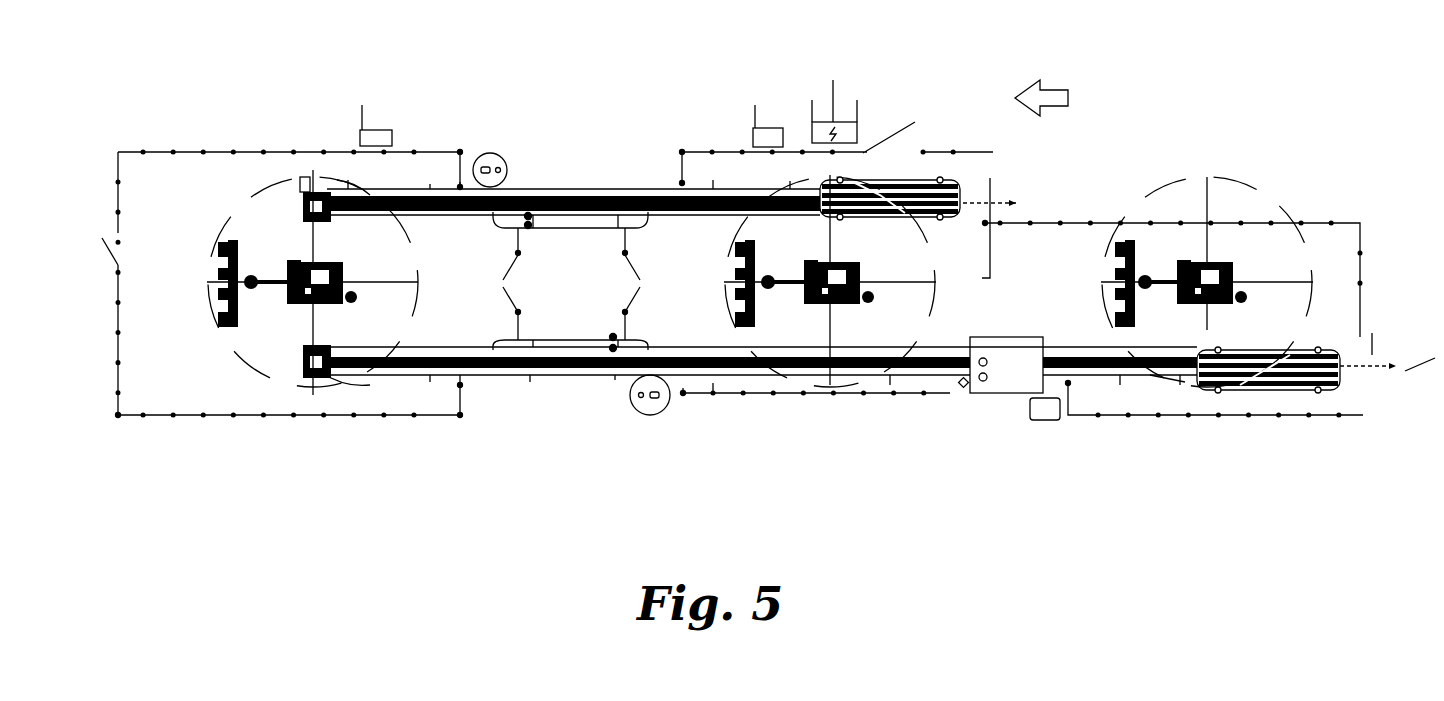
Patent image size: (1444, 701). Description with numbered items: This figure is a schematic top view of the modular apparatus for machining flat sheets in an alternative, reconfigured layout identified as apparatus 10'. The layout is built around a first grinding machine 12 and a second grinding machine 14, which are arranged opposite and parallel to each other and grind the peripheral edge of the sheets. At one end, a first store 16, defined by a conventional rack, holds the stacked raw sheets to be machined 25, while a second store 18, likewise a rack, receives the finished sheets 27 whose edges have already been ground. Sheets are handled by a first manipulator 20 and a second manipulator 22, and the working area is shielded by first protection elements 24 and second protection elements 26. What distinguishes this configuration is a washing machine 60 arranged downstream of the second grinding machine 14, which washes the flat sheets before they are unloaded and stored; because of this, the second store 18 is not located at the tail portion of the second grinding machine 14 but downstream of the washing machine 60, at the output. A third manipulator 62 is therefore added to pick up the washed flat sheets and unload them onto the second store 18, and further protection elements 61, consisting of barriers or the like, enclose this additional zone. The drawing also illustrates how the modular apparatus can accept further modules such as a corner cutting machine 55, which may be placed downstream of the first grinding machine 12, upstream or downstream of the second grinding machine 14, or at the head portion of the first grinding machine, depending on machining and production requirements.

The modular apparatus for machining flat sheets 10' is at (824, 66).
The first grinding machine 12 is at (552, 188).
The second grinding machine 14 is at (578, 380).
The first store 16 is at (900, 176).
The second store 18 is at (1283, 394).
The first manipulator 20 is at (837, 258).
The second manipulator 22 is at (319, 258).
The first protection elements 24 is at (711, 149).
The raw sheets to be machined 25 is at (963, 197).
The second protection elements 26 is at (181, 150).
The finished sheets 27 is at (1345, 375).
The corner cutting machine 55 is at (312, 193).
The washing machine 60 is at (1008, 397).
The further protection elements 61 is at (1091, 221).
The third manipulator 62 is at (1214, 258).